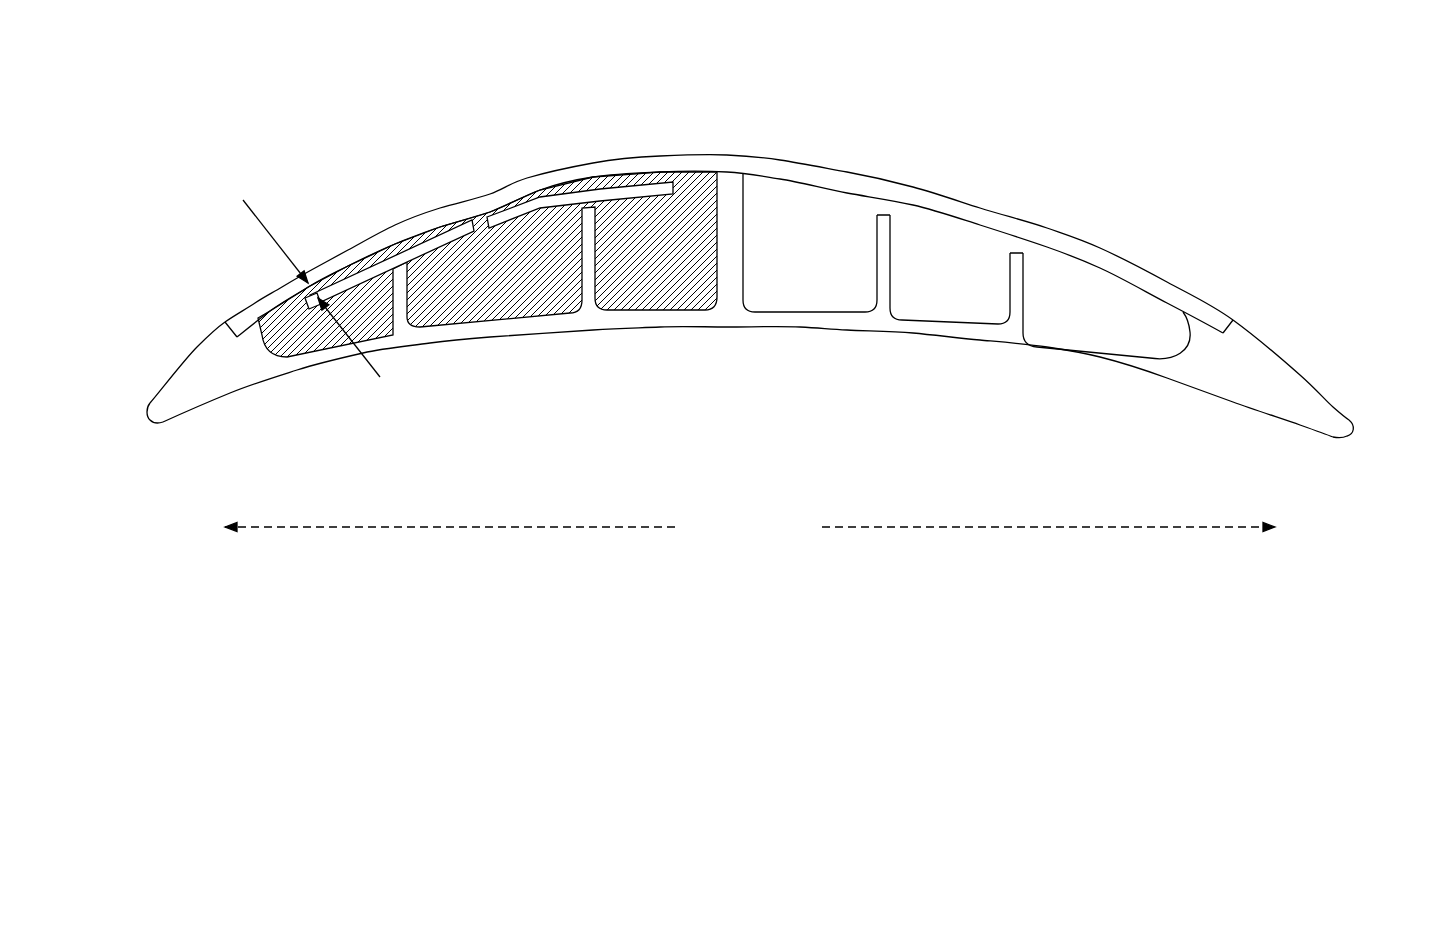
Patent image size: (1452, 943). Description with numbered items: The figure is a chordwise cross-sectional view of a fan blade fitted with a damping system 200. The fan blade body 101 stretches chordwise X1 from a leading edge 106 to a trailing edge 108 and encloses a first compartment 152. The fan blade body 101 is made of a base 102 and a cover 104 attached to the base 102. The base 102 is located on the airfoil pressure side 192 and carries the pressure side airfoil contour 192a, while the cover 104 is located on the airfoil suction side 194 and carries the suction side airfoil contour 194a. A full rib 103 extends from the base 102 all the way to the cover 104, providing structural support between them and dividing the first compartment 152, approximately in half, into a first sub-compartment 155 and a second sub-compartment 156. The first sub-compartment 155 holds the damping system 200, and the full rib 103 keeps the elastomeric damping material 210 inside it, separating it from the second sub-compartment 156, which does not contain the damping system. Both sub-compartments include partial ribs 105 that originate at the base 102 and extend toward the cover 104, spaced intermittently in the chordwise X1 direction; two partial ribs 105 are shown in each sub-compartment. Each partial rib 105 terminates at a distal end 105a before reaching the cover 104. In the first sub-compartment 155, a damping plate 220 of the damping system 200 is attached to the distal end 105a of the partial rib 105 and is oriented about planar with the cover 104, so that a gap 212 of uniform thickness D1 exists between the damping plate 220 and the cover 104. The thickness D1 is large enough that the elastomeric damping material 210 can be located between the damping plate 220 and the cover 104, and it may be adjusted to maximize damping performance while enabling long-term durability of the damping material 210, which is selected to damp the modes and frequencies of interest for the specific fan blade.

The damping system 200 is at (371, 79).
The fan blade body 101 is at (749, 399).
The base 102 is at (1092, 367).
The full rib 103 is at (914, 237).
The cover 104 is at (729, 218).
The partial rib 105 is at (1025, 265).
The distal end 105a is at (1017, 250).
The leading edge 106 is at (1358, 428).
The trailing edge 108 is at (150, 410).
The first compartment 152 is at (700, 191).
The first sub-compartment 155 is at (683, 274).
The second sub-compartment 156 is at (1130, 304).
The airfoil pressure side 192 is at (605, 402).
The pressure side airfoil contour 192a is at (817, 334).
The airfoil suction side 194 is at (980, 209).
The suction side airfoil contour 194a is at (934, 179).
The elastomeric damping material 210 is at (505, 243).
The gap 212 is at (577, 186).
The damping plate 220 is at (603, 197).
The thickness D1 is at (277, 247).
The chordwise direction X1 is at (590, 533).